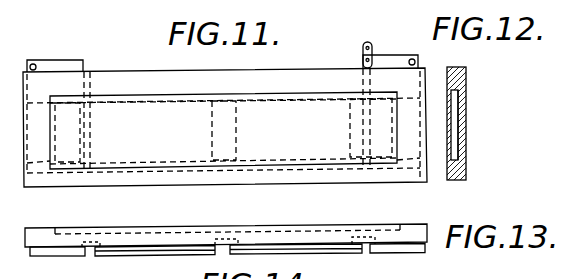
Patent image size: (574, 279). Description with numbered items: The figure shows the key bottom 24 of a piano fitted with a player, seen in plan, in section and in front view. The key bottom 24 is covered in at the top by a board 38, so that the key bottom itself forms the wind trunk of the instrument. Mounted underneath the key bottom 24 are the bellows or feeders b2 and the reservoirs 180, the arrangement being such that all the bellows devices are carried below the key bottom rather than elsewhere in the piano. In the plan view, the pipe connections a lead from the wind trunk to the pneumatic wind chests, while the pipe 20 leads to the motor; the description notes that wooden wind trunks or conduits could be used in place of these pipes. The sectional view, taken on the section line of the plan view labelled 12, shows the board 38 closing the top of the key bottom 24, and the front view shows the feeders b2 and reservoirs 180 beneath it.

In FIG. 11, the plate 12 is at (225, 128).
In FIG. 11, the key bottom 24 is at (152, 182).
In FIG. 12, the key bottom 24 is at (466, 77).
In FIG. 11, the board 38 is at (223, 131).
In FIG. 12, the board 38 is at (466, 116).
In FIG. 11, the reservoir 180 is at (72, 63).
In FIG. 13, the reservoir 180 is at (44, 257).
In FIG. 11, the pipe connection a is at (34, 64).
In FIG. 11, the pipe to the motor 20 is at (380, 39).
In FIG. 13, the bellows or feeder b2 is at (115, 256).